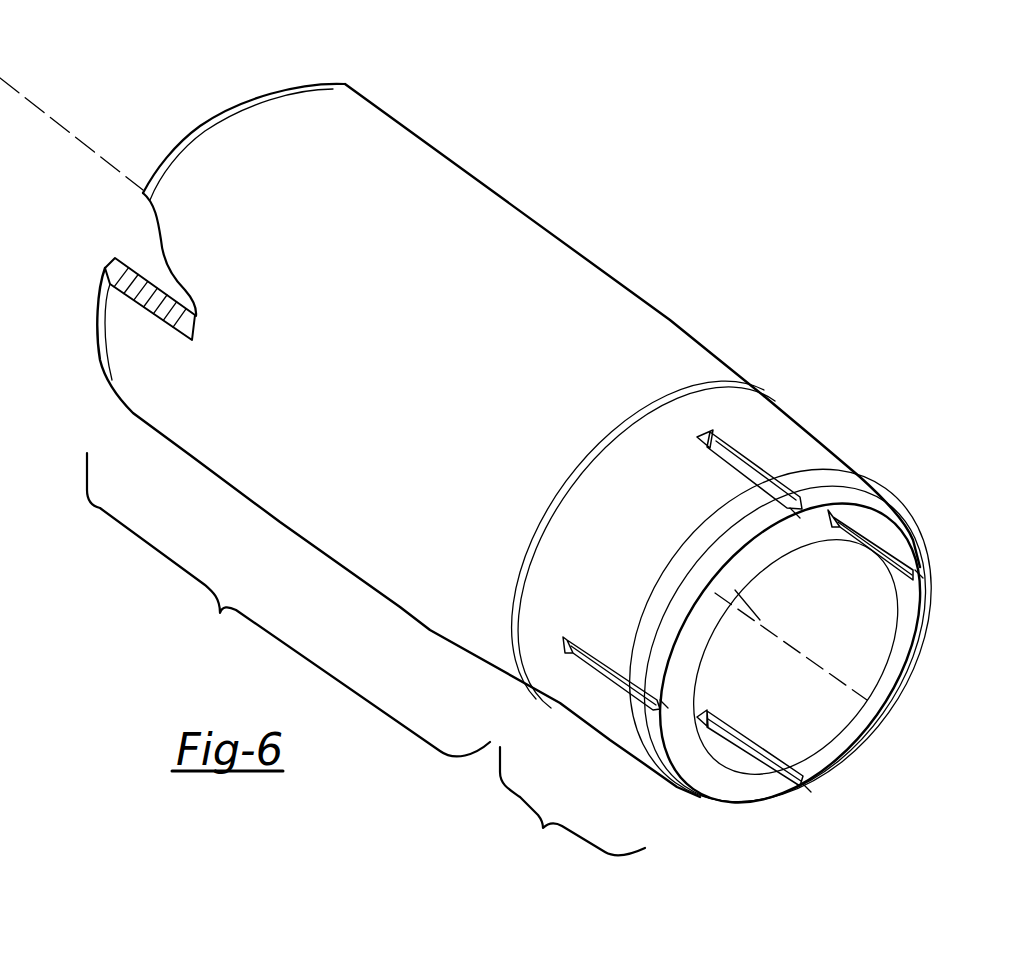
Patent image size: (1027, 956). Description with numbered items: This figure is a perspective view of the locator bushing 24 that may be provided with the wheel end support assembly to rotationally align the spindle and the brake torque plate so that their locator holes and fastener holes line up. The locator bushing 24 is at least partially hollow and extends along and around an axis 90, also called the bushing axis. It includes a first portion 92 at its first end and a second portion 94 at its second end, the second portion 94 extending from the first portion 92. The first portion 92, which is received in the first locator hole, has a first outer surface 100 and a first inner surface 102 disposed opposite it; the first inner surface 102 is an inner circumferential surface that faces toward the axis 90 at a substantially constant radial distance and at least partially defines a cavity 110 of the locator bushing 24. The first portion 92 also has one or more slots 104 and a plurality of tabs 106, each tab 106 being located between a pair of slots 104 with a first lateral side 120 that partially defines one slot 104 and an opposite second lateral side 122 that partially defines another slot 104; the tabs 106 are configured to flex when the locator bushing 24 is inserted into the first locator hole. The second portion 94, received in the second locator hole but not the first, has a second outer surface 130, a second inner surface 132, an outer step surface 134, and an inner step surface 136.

The locator bushing 24 is at (377, 103).
The axis 90 is at (8, 82).
The first portion 92 is at (572, 801).
The second portion 94 is at (288, 604).
The first outer surface 100 is at (820, 443).
The first inner surface 102 is at (883, 603).
The slots 104 is at (925, 575).
The tabs 106 is at (907, 530).
The cavity 110 is at (840, 758).
The first lateral side 120 is at (740, 457).
The second lateral side 122 is at (720, 450).
The second outer surface 130 is at (455, 193).
The second inner surface 132 is at (133, 272).
The outer step surface 134 is at (713, 385).
The inner step surface 136 is at (745, 597).